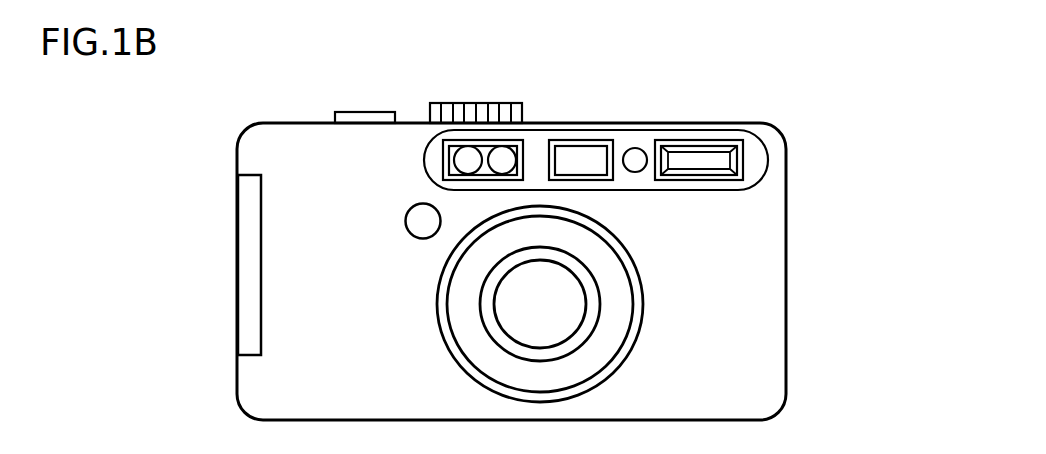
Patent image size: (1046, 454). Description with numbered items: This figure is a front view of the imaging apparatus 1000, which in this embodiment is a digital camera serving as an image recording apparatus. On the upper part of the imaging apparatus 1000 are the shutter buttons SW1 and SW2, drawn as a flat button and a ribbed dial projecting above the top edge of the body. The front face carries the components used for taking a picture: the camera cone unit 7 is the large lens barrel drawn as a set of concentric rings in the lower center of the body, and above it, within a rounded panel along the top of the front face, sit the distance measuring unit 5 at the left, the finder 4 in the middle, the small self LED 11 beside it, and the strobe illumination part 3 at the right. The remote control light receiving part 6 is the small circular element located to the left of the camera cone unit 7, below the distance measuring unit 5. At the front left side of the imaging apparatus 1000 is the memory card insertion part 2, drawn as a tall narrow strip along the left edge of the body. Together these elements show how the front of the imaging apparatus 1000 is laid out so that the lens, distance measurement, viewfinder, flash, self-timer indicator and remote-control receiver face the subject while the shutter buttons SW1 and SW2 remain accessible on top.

The imaging apparatus 1000 is at (300, 51).
The memory card insertion part 2 is at (238, 248).
The strobe illumination part 3 is at (733, 140).
The finder 4 is at (567, 141).
The distance measuring unit 5 is at (452, 159).
The remote control light receiving part 6 is at (407, 227).
The camera cone unit 7 is at (500, 326).
The self LED 11 is at (634, 148).
The shutter button SW1 is at (369, 112).
The shutter button SW2 is at (493, 103).